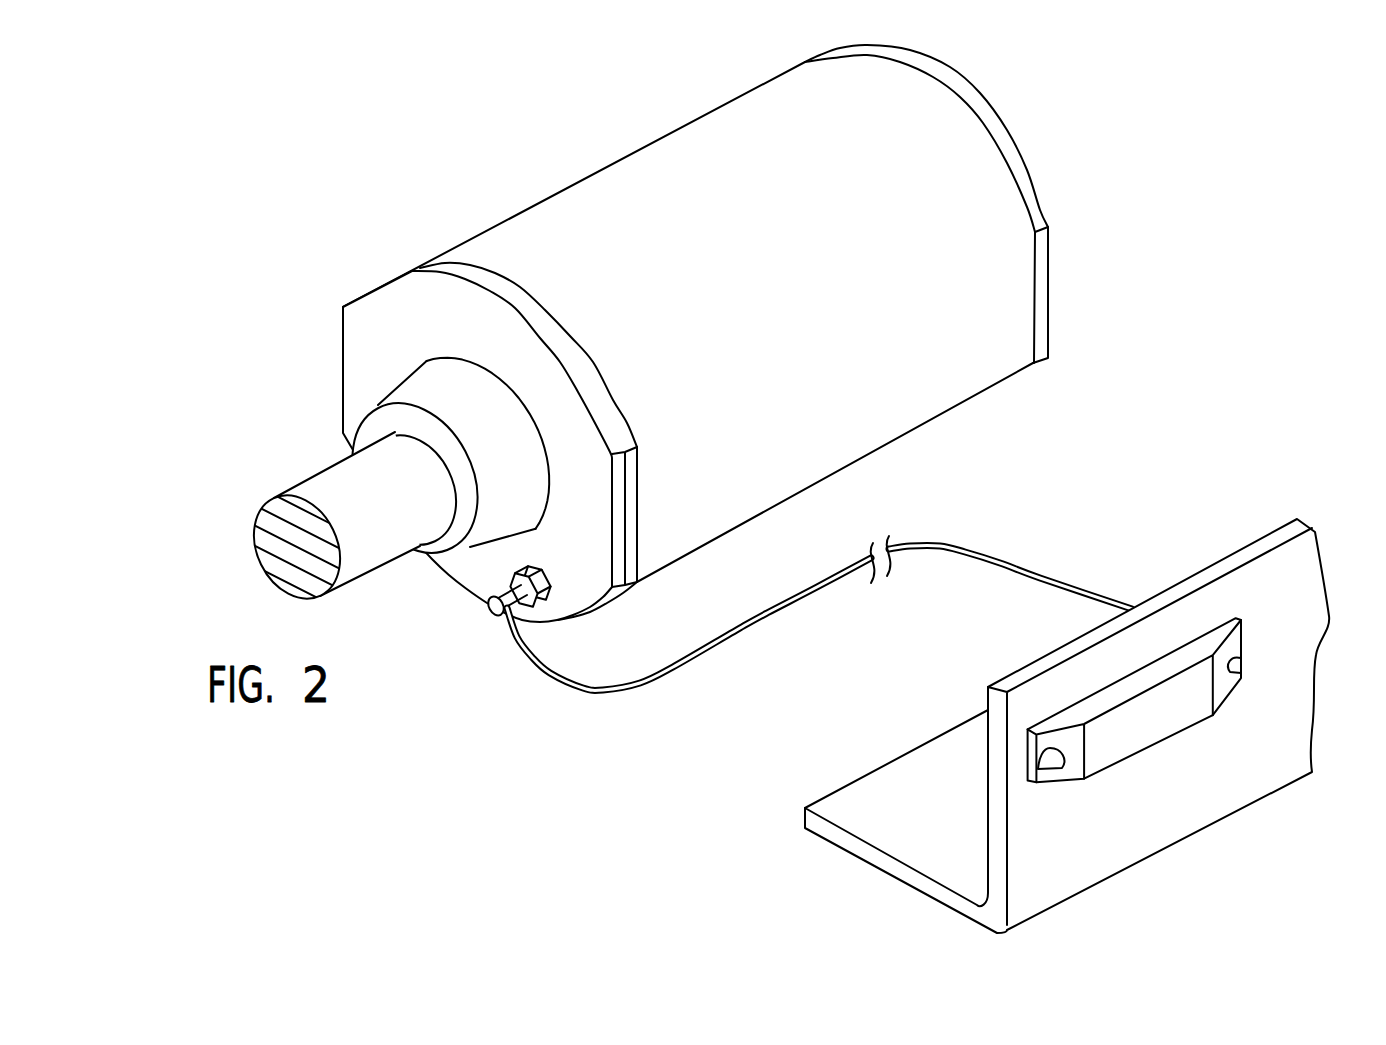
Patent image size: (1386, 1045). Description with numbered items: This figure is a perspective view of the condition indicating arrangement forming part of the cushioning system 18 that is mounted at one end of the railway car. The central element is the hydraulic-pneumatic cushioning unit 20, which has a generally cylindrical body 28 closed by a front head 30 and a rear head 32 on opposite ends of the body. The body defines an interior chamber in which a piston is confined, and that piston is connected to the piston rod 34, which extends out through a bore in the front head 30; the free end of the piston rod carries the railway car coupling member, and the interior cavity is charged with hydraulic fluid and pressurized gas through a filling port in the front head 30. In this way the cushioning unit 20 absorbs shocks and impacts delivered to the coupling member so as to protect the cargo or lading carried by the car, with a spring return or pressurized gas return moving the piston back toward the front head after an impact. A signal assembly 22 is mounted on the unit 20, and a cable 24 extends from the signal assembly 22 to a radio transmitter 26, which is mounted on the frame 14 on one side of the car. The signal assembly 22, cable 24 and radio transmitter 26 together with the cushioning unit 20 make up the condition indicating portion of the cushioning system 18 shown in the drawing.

The frame 14 is at (1087, 726).
The cushioning system 18 is at (675, 395).
The hydraulic-pneumatic cushioning unit 20 is at (635, 344).
The signal assembly 22 is at (497, 619).
The cable 24 is at (760, 622).
The radio transmitter 26 is at (1122, 762).
The cylindrical body 28 is at (862, 456).
The front head 30 is at (413, 317).
The rear head 32 is at (953, 70).
The piston rod 34 is at (347, 457).